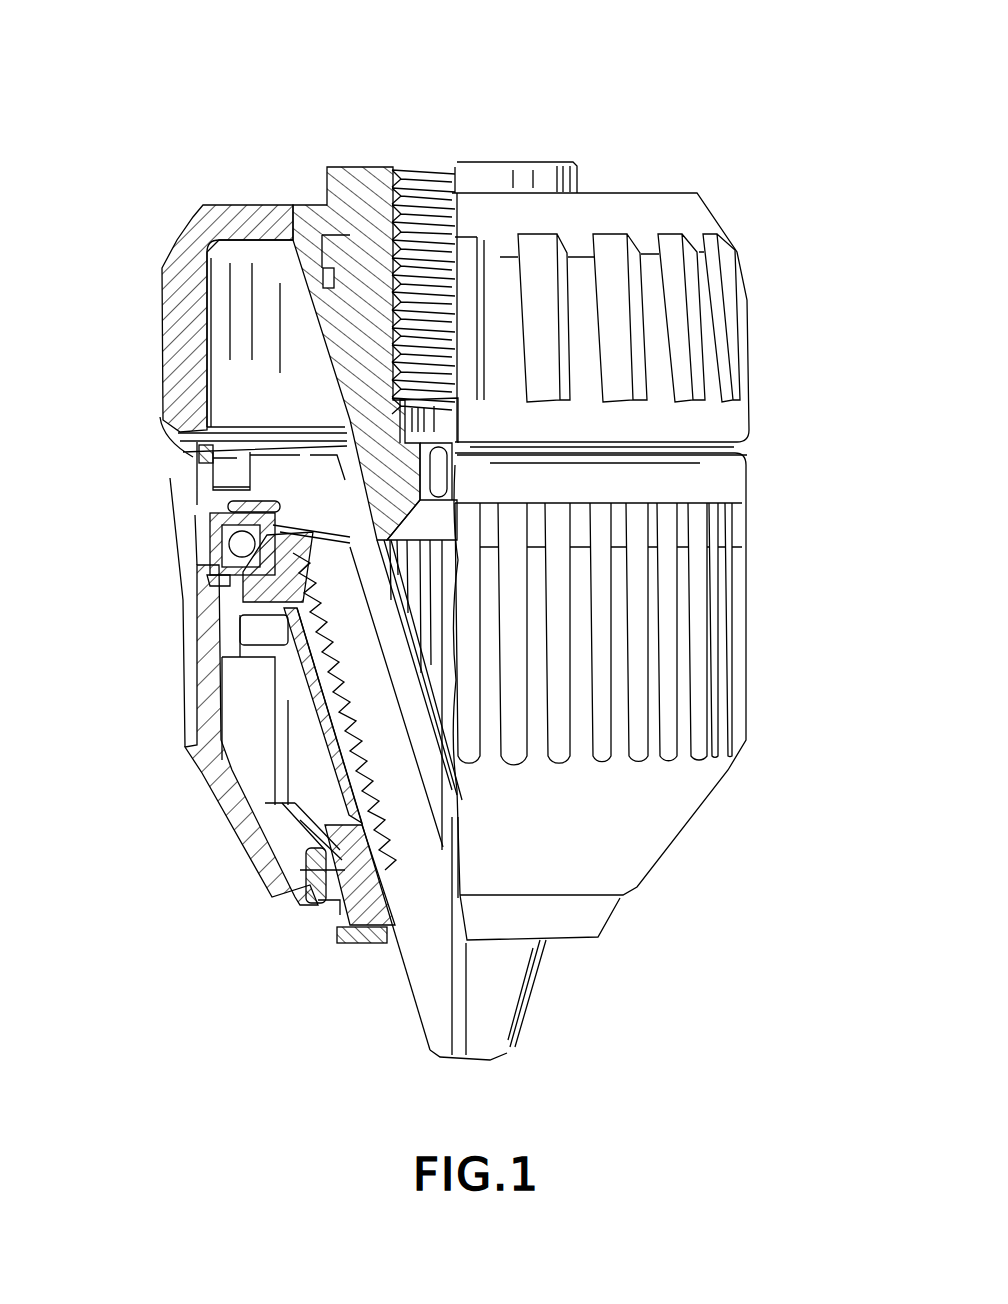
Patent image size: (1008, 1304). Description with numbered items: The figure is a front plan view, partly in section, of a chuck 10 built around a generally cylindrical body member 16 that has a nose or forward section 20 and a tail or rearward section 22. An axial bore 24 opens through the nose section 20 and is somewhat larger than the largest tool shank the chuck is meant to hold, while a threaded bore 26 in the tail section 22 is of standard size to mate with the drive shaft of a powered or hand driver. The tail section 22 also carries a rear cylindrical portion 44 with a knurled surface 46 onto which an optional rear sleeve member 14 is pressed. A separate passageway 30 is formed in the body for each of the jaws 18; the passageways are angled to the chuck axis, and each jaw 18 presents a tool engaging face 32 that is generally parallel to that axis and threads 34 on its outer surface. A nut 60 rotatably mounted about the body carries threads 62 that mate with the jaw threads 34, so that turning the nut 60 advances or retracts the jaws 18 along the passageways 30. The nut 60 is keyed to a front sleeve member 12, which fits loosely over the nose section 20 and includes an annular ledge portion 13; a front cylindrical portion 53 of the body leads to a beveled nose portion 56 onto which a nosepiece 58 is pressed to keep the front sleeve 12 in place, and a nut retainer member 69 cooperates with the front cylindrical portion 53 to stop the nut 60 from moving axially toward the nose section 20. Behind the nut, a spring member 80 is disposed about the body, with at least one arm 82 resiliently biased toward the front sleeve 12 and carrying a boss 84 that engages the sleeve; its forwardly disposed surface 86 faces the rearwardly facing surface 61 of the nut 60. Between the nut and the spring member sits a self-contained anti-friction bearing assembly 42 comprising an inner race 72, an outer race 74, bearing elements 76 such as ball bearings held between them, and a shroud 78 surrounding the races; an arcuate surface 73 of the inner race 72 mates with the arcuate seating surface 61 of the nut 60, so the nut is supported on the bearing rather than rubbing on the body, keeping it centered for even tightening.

The chuck 10 is at (838, 96).
The front sleeve member 12 is at (677, 800).
The annular ledge portion 13 is at (280, 868).
The rear sleeve member 14 is at (697, 216).
The body member 16 is at (270, 840).
The jaws 18 is at (417, 948).
The nose section 20 is at (327, 900).
The tail section 22 is at (537, 183).
The axial bore 24 is at (357, 943).
The threaded bore 26 is at (417, 202).
The passageway 30 is at (330, 760).
The tool engaging face 32 is at (463, 1060).
The threads 34 is at (318, 640).
The self-contained anti-friction bearing assembly 42 is at (207, 502).
The rear cylindrical portion 44 is at (347, 180).
The knurled surface 46 is at (273, 202).
The front cylindrical portion 53 is at (327, 807).
The beveled nose portion 56 is at (347, 875).
The nosepiece 58 is at (323, 913).
The nut 60 is at (243, 598).
The rearwardly facing arcuate seating surface 61 is at (277, 533).
The threads 62 is at (306, 578).
The nut retainer member 69 is at (295, 700).
The inner race 72 is at (240, 570).
The arcuate surface 73 is at (422, 624).
The outer race 74 is at (193, 538).
The bearing elements 76 is at (237, 550).
The shroud 78 is at (207, 523).
The spring member 80 is at (250, 465).
The arm 82 is at (232, 452).
The boss 84 is at (167, 477).
The forwardly disposed surface 86 is at (278, 512).